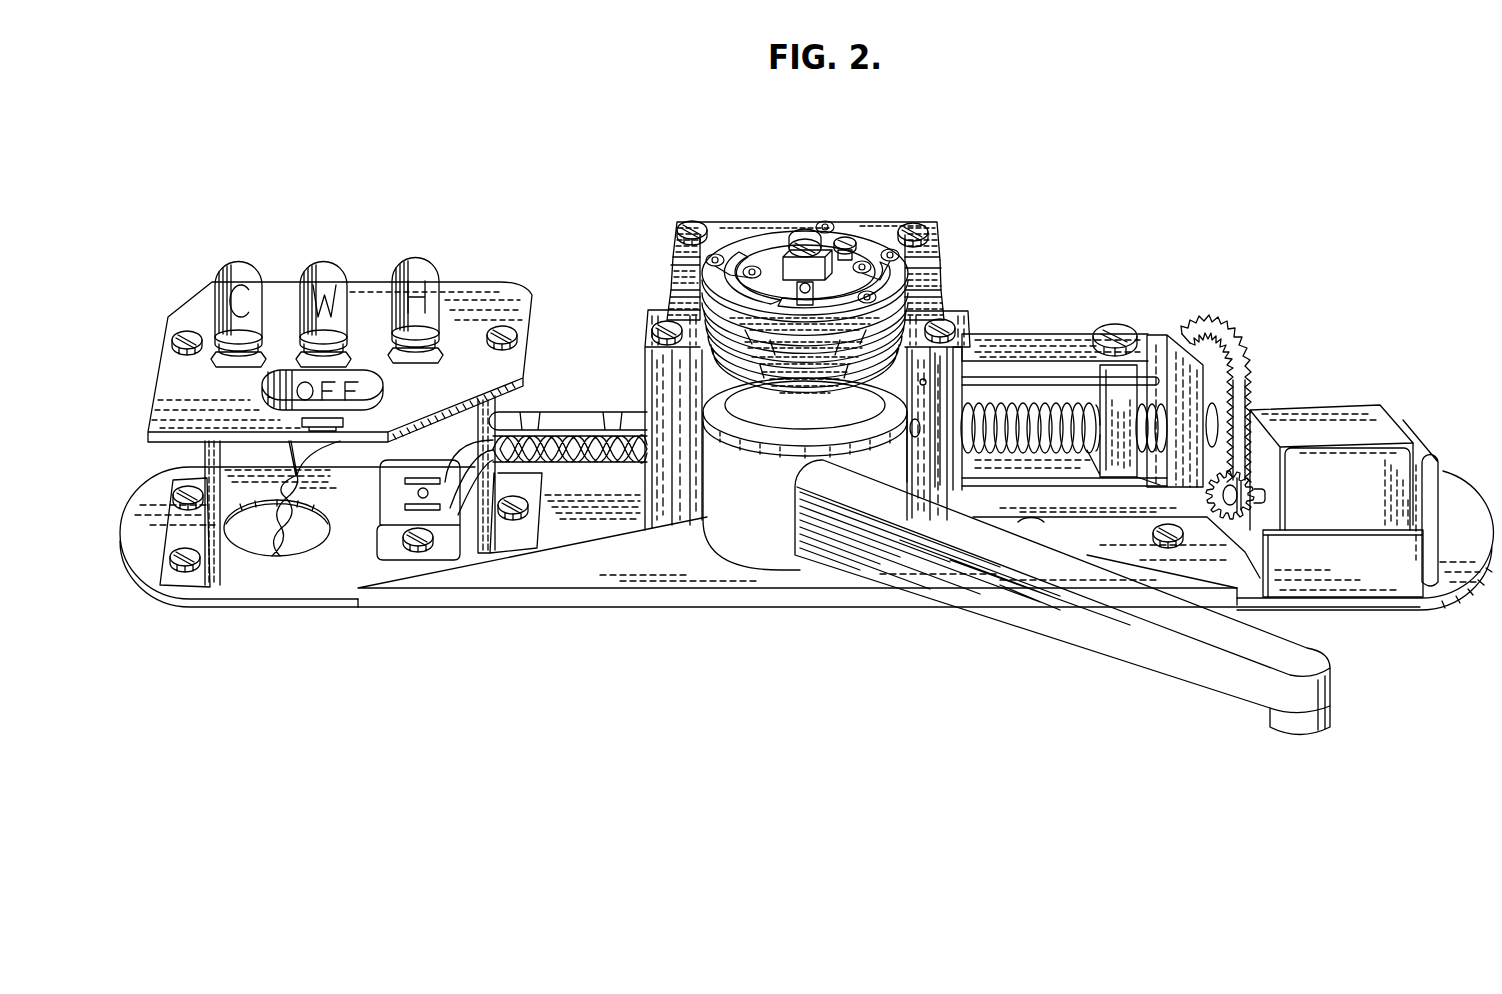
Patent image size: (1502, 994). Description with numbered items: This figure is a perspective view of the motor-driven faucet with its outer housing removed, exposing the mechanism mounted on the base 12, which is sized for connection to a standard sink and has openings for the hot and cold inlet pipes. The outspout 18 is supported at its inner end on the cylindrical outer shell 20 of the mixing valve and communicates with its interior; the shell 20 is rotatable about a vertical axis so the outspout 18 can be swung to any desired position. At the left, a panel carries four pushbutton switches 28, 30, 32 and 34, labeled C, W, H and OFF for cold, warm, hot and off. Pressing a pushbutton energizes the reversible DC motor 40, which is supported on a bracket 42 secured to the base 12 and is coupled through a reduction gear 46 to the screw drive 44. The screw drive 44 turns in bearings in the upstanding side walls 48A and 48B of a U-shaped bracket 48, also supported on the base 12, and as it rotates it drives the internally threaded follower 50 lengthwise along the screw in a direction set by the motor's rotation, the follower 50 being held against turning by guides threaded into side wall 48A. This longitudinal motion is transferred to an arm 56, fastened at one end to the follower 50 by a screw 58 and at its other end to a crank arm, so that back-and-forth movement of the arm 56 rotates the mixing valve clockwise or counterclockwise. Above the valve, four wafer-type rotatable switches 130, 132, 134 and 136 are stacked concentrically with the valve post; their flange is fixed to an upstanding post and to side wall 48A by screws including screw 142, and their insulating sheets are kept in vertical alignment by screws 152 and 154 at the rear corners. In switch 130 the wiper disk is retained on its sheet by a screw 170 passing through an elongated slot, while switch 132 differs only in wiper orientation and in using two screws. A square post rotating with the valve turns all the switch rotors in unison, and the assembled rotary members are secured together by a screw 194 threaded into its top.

The base 12 is at (740, 578).
The outspout 18 is at (1083, 635).
The cylindrical outer shell 20 is at (763, 509).
The pushbutton switch 28 is at (237, 277).
The pushbutton switch 30 is at (325, 275).
The pushbutton switch 32 is at (419, 273).
The pushbutton switch 34 is at (262, 391).
The reversible DC motor 40 is at (1360, 493).
The bracket 42 is at (1373, 573).
The screw drive 44 is at (1063, 447).
The reduction gear 46 is at (1242, 360).
The U-shaped bracket 48 is at (1106, 513).
The side wall 48A is at (952, 372).
The side wall 48B is at (1177, 342).
The internally threaded follower 50 is at (1133, 405).
The arm 56 is at (1060, 342).
The screw 58 is at (1120, 325).
The wafer-type rotatable switch 130 is at (675, 243).
The wafer-type rotatable switch 132 is at (671, 278).
The wafer-type rotatable switch 134 is at (669, 302).
The wafer-type rotatable switch 136 is at (645, 342).
The screw 142 is at (957, 322).
The screw 152 is at (700, 222).
The screw 154 is at (930, 232).
The screw 170 is at (840, 240).
The screw 194 is at (805, 238).